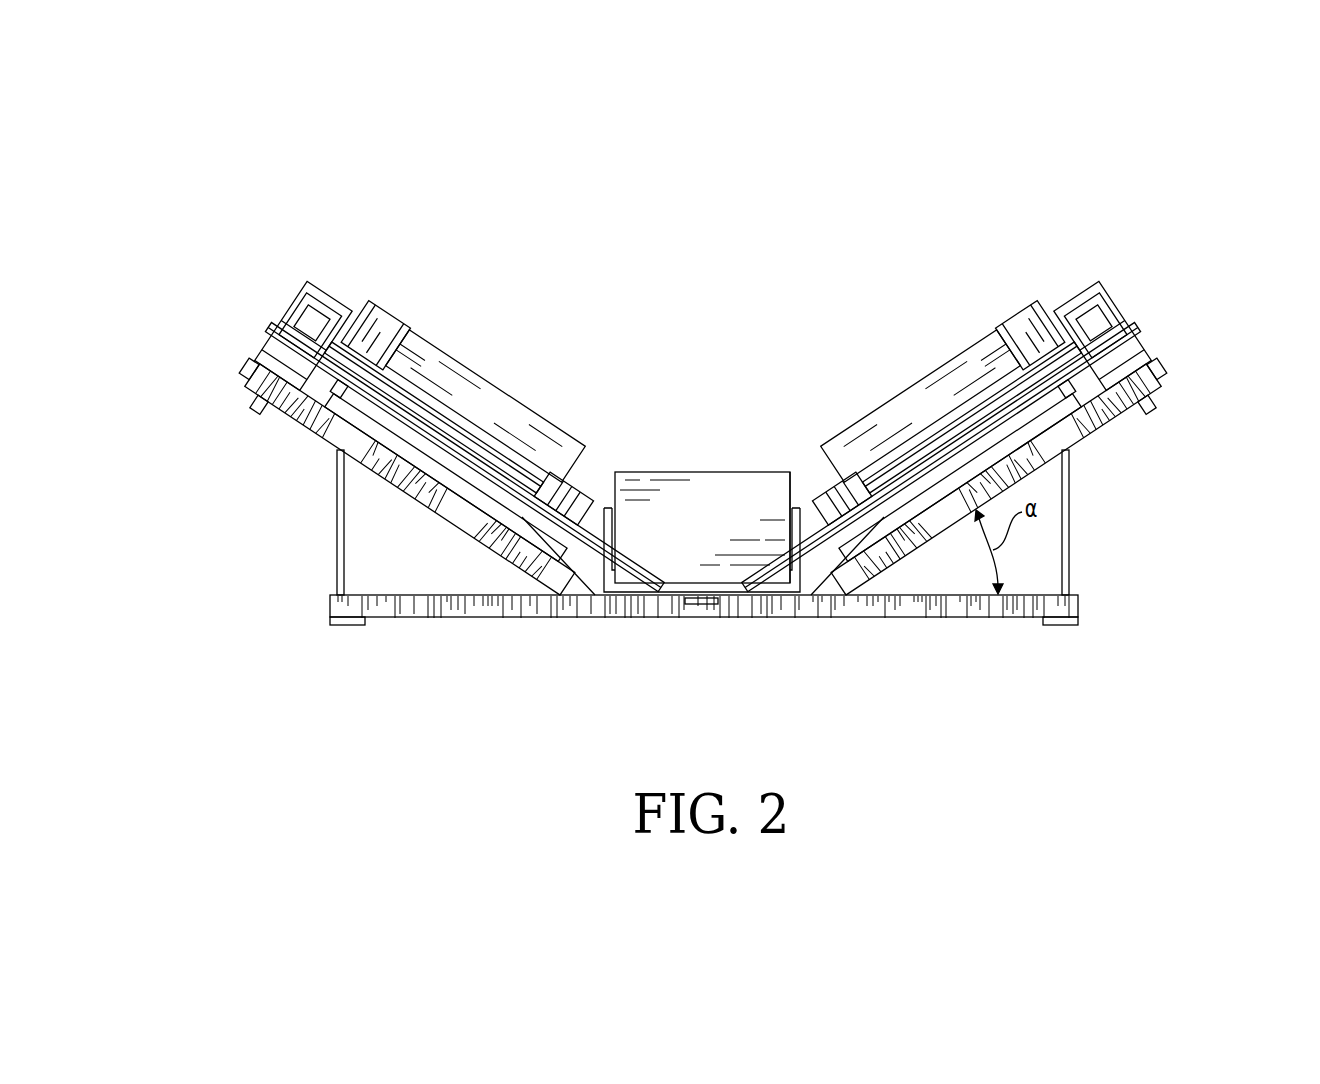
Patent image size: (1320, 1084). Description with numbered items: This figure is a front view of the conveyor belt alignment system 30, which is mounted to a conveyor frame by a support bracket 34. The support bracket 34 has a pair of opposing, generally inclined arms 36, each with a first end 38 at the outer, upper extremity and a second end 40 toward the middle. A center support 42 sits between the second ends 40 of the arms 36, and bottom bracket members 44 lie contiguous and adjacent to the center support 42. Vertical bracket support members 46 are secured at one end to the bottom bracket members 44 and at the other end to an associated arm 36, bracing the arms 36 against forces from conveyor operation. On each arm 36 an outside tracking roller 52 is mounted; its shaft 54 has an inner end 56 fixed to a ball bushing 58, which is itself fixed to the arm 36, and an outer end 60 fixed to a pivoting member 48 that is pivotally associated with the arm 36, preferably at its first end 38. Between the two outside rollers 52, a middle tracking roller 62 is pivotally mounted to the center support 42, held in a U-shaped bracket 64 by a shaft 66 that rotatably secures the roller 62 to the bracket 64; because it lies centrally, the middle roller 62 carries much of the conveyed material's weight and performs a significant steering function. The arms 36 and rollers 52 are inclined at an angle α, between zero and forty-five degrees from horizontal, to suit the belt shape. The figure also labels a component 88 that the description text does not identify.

The conveyor belt alignment system 30 is at (678, 323).
The support bracket 34 is at (980, 640).
The opposing inclined arms 36 is at (356, 490).
The first end 38 is at (245, 373).
The second end 40 is at (558, 594).
The center support 42 is at (705, 620).
The bottom bracket members 44 is at (412, 620).
The vertical bracket support members 46 is at (337, 500).
The pivoting member 48 is at (248, 296).
The outside tracking roller 52 is at (474, 368).
The shaft 54 is at (557, 487).
The inner end 56 is at (563, 477).
The ball bushing 58 is at (580, 487).
The outer end 60 is at (401, 318).
The middle tracking roller 62 is at (660, 472).
The U-shaped bracket 64 is at (625, 580).
The shaft 66 is at (792, 470).
The sensor head housing 88 is at (379, 302).